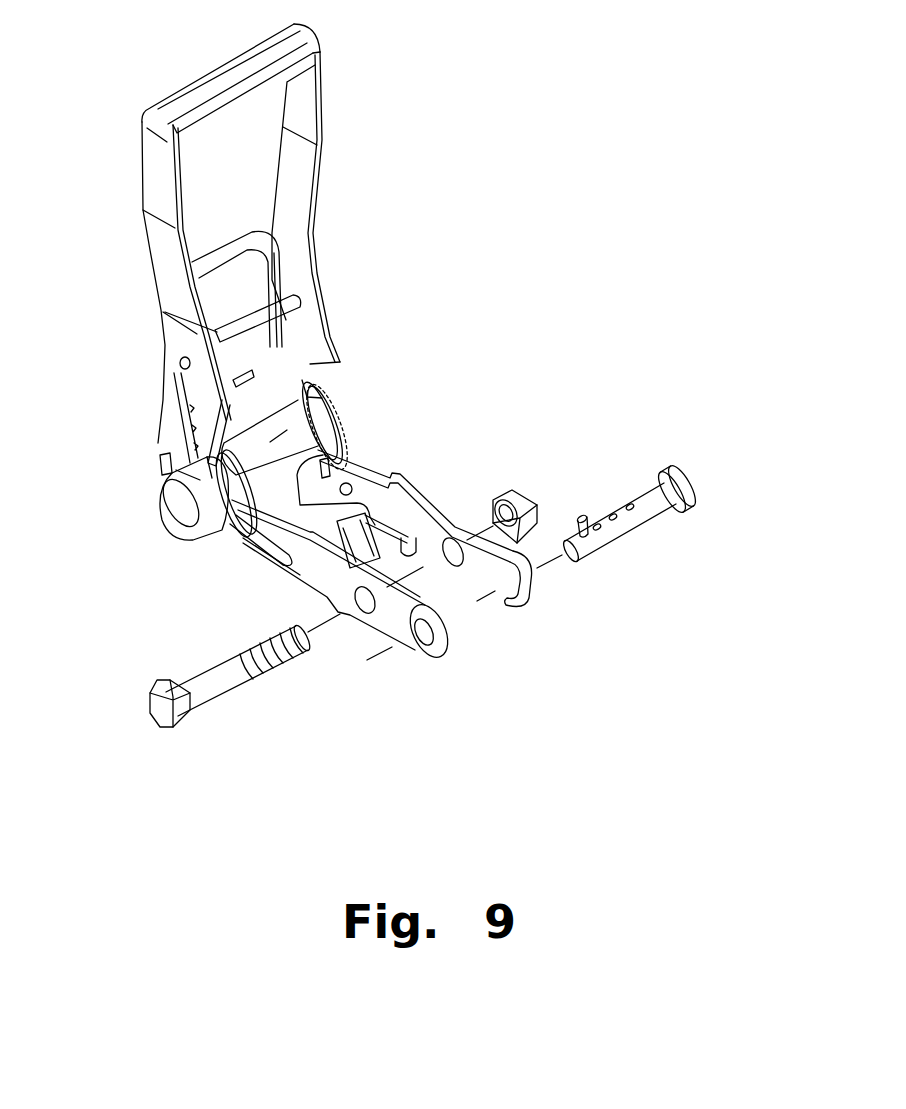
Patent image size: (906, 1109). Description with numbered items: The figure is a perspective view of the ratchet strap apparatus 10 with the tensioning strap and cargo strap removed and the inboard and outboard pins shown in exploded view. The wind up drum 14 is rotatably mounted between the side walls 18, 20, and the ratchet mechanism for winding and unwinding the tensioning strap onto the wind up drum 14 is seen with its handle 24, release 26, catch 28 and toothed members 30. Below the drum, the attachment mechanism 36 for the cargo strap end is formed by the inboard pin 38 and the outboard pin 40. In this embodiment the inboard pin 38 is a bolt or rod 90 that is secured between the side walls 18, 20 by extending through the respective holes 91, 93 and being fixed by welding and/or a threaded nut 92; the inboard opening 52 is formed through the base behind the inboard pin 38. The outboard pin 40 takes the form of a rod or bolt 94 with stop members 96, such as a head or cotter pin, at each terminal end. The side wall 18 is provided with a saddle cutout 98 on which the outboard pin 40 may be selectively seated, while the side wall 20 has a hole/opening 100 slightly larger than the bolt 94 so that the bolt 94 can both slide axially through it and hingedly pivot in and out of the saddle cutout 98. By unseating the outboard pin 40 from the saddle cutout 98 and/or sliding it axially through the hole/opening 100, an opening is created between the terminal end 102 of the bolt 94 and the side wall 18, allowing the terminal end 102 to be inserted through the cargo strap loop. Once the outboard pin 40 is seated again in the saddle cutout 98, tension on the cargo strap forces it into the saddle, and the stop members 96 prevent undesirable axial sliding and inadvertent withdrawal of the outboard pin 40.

The ratchet strap apparatus 10 is at (477, 324).
The wind up drum 14 is at (336, 356).
The side wall 18 is at (422, 517).
The side wall 20 is at (320, 567).
The handle 24 is at (152, 163).
The release 26 is at (216, 250).
The catch 28 is at (328, 495).
The toothed members 30 is at (335, 408).
The attachment mechanism 36 is at (474, 654).
The inboard pin 38 is at (149, 730).
The outboard pin 40 is at (629, 552).
The inboard opening 52 is at (395, 555).
The bolt or rod 90 is at (220, 683).
The hole 91 is at (461, 531).
The threaded nut 92 is at (515, 490).
The hole 93 is at (352, 628).
The rod or bolt 94 is at (640, 517).
The stop members 96 is at (667, 468).
The saddle cutout 98 is at (538, 595).
The hole/opening 100 is at (413, 659).
The terminal end 102 is at (711, 465).